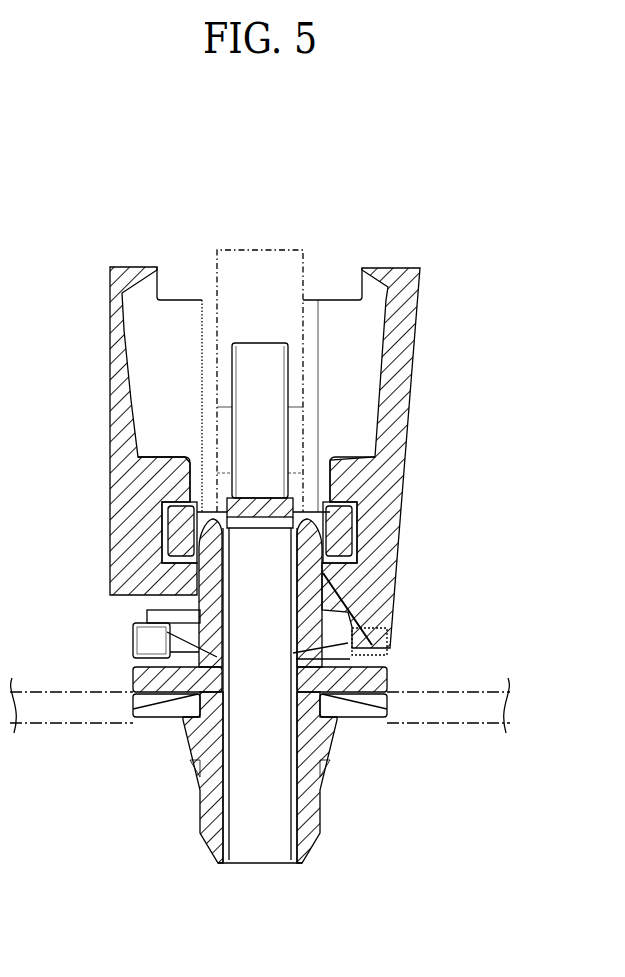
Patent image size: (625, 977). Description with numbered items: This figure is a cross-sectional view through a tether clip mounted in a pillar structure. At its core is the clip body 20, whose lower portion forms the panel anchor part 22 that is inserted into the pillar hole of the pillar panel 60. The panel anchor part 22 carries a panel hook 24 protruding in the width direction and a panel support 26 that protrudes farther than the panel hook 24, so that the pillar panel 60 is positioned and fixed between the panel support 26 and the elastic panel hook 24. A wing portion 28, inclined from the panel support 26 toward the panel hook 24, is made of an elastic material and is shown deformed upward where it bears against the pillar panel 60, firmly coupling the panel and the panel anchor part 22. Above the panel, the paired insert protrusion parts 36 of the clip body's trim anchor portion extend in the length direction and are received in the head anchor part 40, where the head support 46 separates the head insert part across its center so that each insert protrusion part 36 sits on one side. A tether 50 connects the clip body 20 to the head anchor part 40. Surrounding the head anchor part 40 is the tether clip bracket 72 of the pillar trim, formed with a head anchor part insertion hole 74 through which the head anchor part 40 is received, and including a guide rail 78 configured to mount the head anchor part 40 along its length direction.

The clip body 20 is at (362, 830).
The panel anchor part 22 is at (332, 860).
The panel hook 24 is at (186, 738).
The panel support 26 is at (135, 672).
The wing portion 28 is at (360, 712).
The insert protrusion part 36 is at (307, 537).
The head anchor part 40 is at (178, 512).
The head support 46 is at (257, 497).
The tether 50 is at (253, 353).
The pillar panel 60 is at (463, 725).
The tether clip bracket 72 is at (395, 547).
The head anchor part insertion hole 74 is at (272, 316).
The guide rail 78 is at (163, 463).